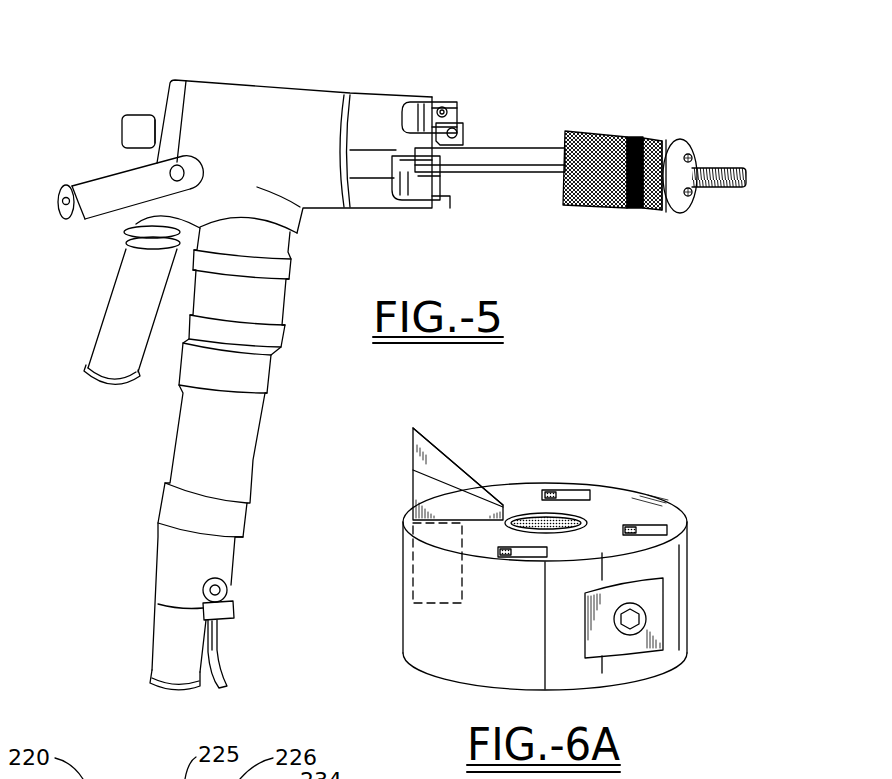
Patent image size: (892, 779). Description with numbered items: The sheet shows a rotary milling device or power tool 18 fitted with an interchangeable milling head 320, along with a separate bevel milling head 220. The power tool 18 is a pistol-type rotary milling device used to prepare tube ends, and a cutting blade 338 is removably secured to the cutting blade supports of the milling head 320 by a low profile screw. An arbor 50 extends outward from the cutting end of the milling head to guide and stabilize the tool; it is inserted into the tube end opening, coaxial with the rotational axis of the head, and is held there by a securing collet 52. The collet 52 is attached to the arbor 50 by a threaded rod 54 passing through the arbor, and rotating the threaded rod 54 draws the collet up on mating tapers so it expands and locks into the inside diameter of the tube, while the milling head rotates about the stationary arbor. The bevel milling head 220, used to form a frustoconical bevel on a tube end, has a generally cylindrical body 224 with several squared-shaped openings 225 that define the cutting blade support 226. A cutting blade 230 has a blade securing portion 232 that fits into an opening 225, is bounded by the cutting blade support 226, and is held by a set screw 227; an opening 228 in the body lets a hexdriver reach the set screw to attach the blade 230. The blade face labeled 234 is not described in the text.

In FIG. 5, the power tool 18 is at (293, 88).
In FIG. 5, the milling head 320 is at (425, 93).
In FIG. 5, the cutting blade 338 is at (463, 128).
In FIG. 5, the arbor 50 is at (510, 177).
In FIG. 5, the collet 52 is at (618, 133).
In FIG. 5, the threaded rod 54 is at (723, 189).
In FIG. 6A, the bevel milling head 220 is at (628, 491).
In FIG. 6A, the cylindrical body 224 is at (423, 638).
In FIG. 6A, the opening 225 is at (553, 490).
In FIG. 6A, the cutting blade support 226 is at (563, 492).
In FIG. 6A, the set screw 227 is at (646, 617).
In FIG. 6A, the opening 228 is at (610, 643).
In FIG. 6A, the cutting blade 230 is at (413, 487).
In FIG. 6A, the blade securing portion 232 is at (417, 575).
In FIG. 6A, the wedge face 234 is at (444, 464).